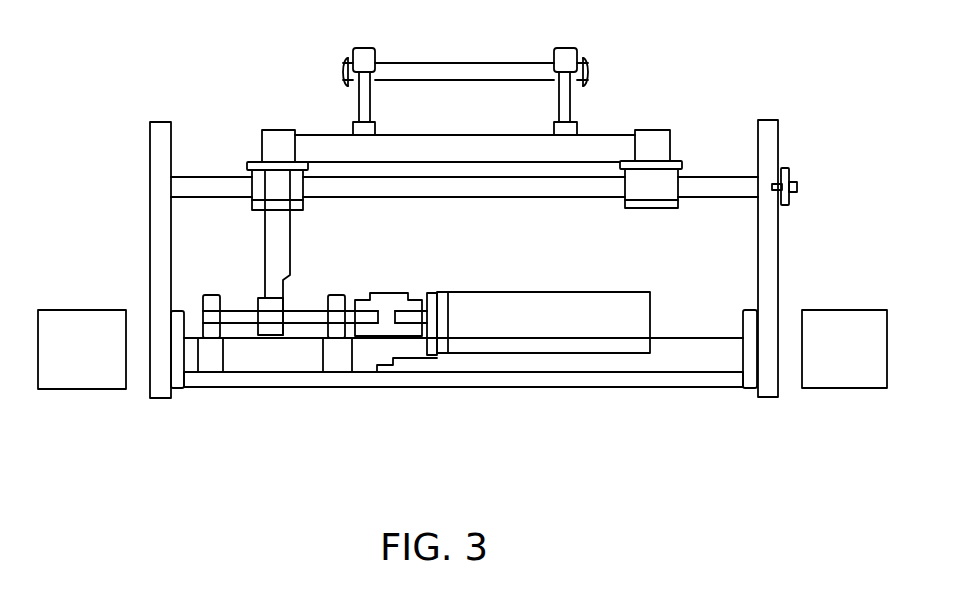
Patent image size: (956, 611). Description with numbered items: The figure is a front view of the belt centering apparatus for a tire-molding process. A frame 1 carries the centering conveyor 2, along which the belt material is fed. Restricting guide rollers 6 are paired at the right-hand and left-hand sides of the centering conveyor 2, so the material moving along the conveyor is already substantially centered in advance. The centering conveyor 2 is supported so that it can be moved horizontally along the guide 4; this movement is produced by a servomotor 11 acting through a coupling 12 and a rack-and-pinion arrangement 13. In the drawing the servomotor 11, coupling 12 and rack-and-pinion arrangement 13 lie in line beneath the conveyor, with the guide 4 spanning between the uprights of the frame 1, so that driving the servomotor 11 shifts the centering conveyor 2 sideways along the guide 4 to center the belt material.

The frame 1 is at (830, 317).
The centering conveyor 2 is at (610, 133).
The guide 4 is at (708, 175).
The restricting guide rollers 6 is at (377, 55).
The servomotor 11 is at (542, 347).
The coupling 12 is at (357, 340).
The rack-and-pinion arrangement 13 is at (303, 322).